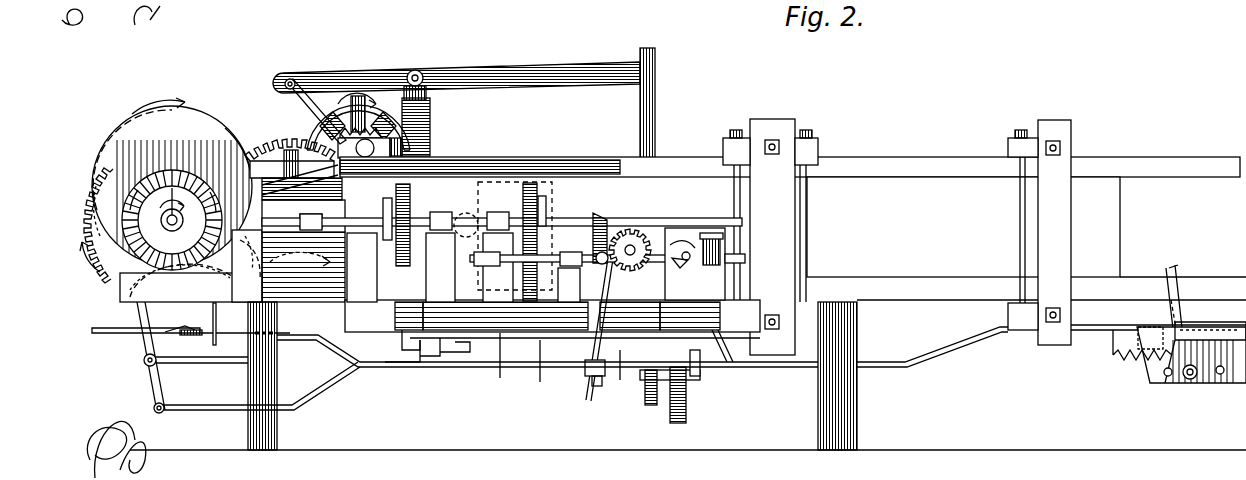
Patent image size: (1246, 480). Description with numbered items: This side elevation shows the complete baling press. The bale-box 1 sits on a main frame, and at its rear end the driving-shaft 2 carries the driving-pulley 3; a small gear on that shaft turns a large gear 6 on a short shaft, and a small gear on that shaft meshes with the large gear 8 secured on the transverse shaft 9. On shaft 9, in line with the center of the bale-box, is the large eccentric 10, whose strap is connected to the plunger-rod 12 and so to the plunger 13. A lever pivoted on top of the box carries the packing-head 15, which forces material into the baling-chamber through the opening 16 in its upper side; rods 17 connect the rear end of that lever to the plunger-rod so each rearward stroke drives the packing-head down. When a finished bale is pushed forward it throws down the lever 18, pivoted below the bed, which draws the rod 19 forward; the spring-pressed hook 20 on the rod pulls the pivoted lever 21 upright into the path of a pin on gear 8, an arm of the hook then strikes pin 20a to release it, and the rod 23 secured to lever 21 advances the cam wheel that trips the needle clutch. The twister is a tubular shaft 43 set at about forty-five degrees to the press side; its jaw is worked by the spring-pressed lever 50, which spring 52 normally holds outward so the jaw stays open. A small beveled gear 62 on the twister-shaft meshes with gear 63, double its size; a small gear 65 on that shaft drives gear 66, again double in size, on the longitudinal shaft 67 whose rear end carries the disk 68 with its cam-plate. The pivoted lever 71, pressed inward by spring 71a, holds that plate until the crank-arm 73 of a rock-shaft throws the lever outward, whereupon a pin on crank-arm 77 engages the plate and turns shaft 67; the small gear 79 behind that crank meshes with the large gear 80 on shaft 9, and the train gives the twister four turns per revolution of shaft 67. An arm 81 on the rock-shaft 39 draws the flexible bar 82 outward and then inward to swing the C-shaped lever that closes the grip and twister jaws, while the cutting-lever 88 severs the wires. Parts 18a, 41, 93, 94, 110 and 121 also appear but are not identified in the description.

The bale-box 1 is at (590, 160).
The driving-shaft 2 is at (378, 148).
The driving-pulley 3 is at (358, 96).
The large gear 6 is at (228, 145).
The large gear 8 is at (92, 258).
The transverse shaft 9 is at (172, 178).
The large eccentric 10 is at (183, 106).
The plunger-rod 12 is at (280, 168).
The plunger 13 is at (495, 182).
The packing-head 15 is at (488, 145).
The opening 16 is at (303, 251).
The rods 17 is at (300, 96).
The lever 18 is at (1182, 268).
The bracket 18a is at (1132, 358).
The rod 19 is at (316, 340).
The spring-pressed hook 20 is at (102, 330).
The pin 20a is at (214, 320).
The pivoted lever 21 is at (145, 378).
The rod 23 is at (206, 408).
The rock-shaft 39 is at (590, 376).
The bracket 41 is at (430, 118).
The tubular twister-shaft 43 is at (682, 268).
The spring-pressed pivoted lever 50 is at (623, 329).
The spring 52 is at (690, 316).
The small beveled gear 62 is at (655, 238).
The beveled gear 63 is at (632, 232).
The small gear 65 is at (505, 316).
The gear 66 is at (530, 184).
The short longitudinal shaft 67 is at (466, 214).
The disk 68 is at (412, 204).
The pivoted lever 71 is at (392, 316).
The spring 71a is at (411, 335).
The crank-arm 73 is at (418, 356).
The crank-arm 77 is at (338, 258).
The small gear 79 is at (214, 198).
The large gear 80 is at (142, 196).
The arm 81 is at (688, 392).
The bar 82 is at (652, 405).
The cutting-lever 88 is at (730, 348).
The bevel gear 93 is at (606, 222).
The collar 94 is at (546, 200).
The cylinder 110 is at (712, 238).
The arm 121 is at (456, 81).